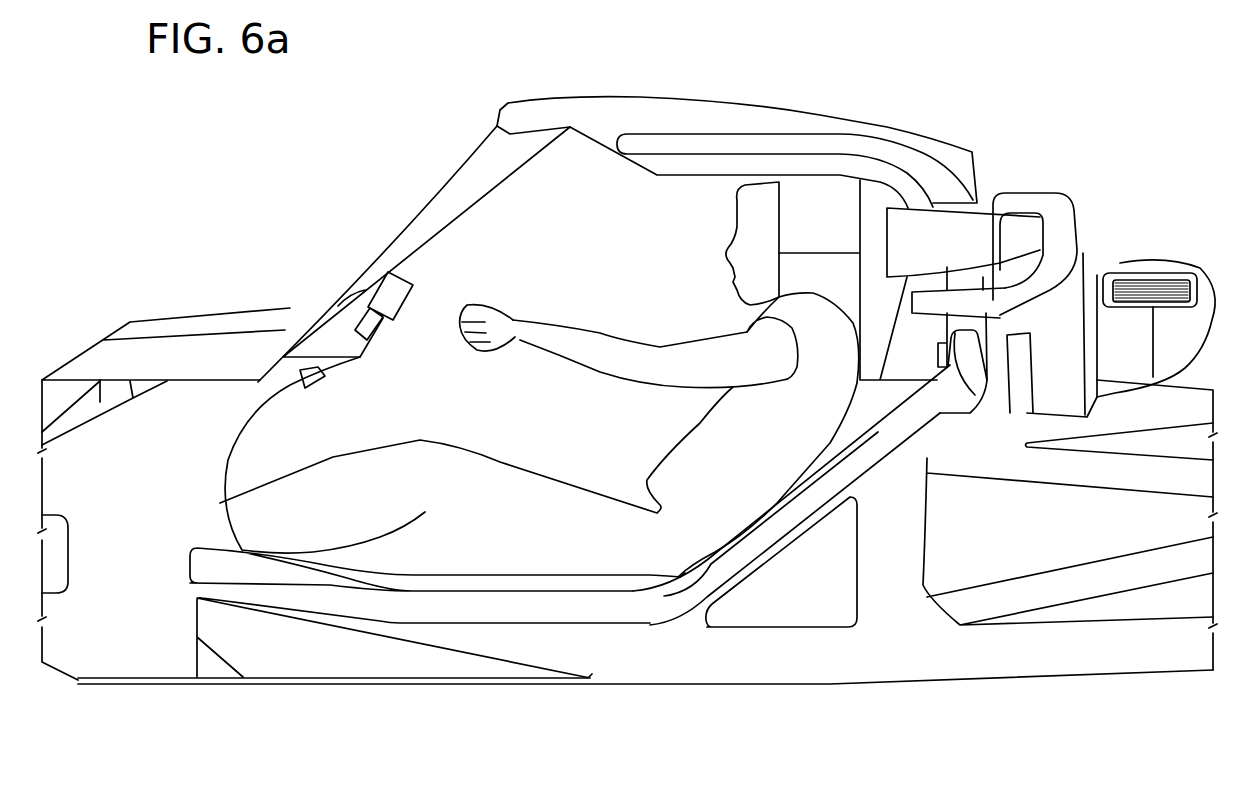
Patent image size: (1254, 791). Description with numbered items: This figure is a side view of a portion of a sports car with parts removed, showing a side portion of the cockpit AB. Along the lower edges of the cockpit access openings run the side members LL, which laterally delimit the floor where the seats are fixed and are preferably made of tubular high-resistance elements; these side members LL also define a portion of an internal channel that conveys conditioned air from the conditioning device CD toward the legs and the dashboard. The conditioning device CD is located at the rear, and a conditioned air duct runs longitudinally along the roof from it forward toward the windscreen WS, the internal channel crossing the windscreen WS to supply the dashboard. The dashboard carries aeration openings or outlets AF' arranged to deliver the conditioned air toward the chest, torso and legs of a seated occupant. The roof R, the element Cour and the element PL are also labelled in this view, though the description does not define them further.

The windscreen WS is at (413, 205).
The dashboard ledge PL is at (334, 337).
The cockpit AB is at (483, 263).
The aeration openings and/or outlets AF' is at (367, 350).
The roof R is at (743, 104).
The roof hoop Cour is at (916, 165).
The conditioning device CD is at (1075, 188).
The side members LL is at (523, 613).